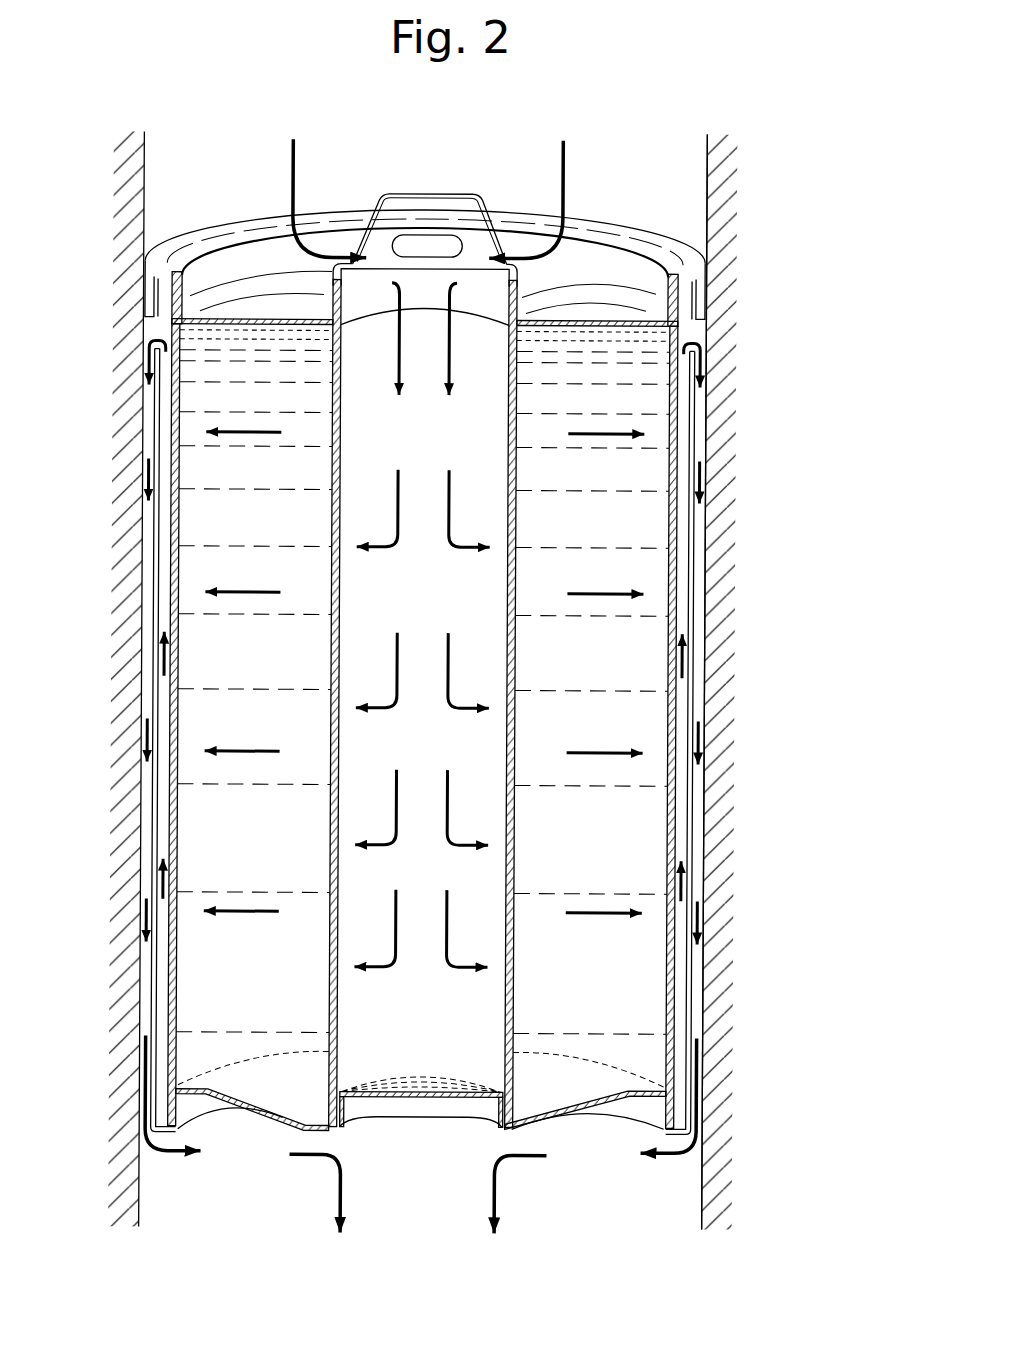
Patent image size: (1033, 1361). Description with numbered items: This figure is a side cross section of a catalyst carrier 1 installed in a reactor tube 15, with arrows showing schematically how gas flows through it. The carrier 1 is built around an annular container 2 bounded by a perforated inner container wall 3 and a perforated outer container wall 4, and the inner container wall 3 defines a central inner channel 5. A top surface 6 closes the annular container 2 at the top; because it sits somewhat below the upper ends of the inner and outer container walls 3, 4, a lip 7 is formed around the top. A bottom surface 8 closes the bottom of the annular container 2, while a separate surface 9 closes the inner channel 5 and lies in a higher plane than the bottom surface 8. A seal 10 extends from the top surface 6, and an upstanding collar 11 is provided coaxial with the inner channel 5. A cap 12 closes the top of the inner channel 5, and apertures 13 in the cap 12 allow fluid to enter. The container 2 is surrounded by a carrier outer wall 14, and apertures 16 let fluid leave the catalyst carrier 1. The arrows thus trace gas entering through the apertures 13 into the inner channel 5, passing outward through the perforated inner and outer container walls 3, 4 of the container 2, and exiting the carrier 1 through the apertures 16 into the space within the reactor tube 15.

The catalyst carrier 1 is at (770, 442).
The annular container 2 is at (650, 572).
The inner container wall 3 is at (332, 537).
The outer container wall 4 is at (168, 546).
The inner channel 5 is at (500, 1002).
The top surface 6 is at (276, 300).
The lip 7 is at (626, 268).
The bottom surface 8 is at (269, 1093).
The surface 9 is at (433, 1097).
The seal 10 is at (167, 243).
The upstanding collar 11 is at (547, 300).
The cap 12 is at (447, 205).
The apertures 13 is at (338, 262).
The carrier outer wall 14 is at (700, 714).
The reactor tube 15 is at (716, 312).
The apertures 16 is at (155, 338).